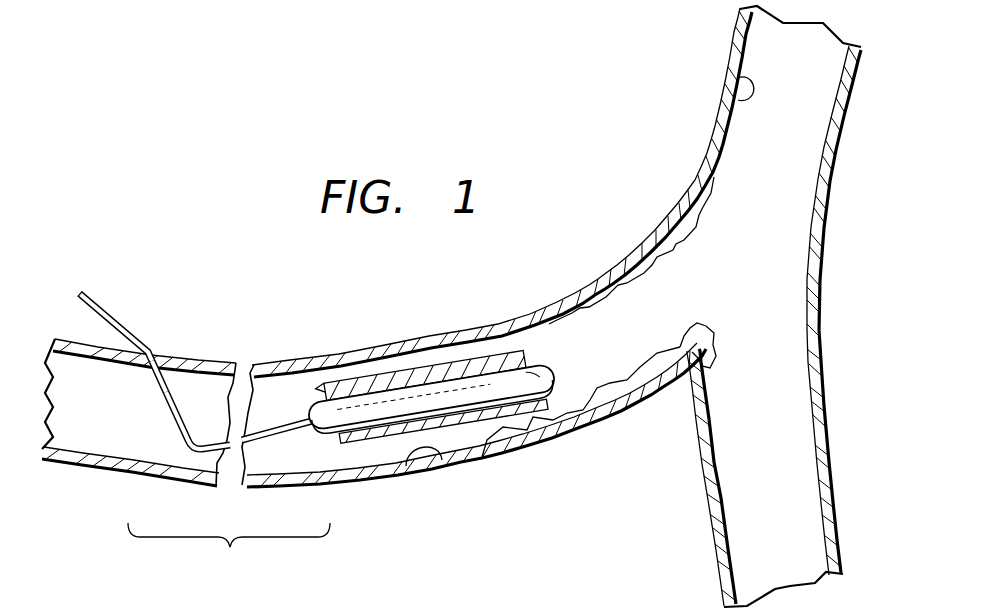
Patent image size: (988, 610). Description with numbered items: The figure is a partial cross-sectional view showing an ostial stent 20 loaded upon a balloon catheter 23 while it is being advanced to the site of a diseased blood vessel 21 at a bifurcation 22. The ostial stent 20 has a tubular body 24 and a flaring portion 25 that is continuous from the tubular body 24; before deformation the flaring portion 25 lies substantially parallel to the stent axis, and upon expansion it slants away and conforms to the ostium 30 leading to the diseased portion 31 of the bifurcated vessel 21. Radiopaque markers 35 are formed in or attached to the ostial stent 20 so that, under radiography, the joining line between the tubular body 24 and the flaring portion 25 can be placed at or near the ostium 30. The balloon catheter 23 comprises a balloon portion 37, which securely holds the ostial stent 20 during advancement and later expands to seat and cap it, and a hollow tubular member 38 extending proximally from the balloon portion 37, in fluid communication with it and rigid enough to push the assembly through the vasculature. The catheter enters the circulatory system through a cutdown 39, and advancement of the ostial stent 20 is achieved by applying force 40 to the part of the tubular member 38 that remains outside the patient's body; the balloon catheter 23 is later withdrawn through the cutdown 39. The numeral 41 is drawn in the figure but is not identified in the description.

The ostial stent 20 is at (461, 404).
The blood vessel 21 is at (733, 43).
The bifurcation 22 is at (692, 371).
The balloon catheter 23 is at (280, 426).
The tubular body 24 is at (434, 396).
The flaring portion 25 is at (459, 436).
The ostium 30 is at (451, 306).
The diseased portion 31 is at (630, 262).
The radiopaque markers 35 is at (431, 397).
The balloon portion 37 is at (572, 368).
The tubular member 38 is at (162, 394).
The cutdown 39 is at (160, 355).
The force 40 is at (143, 322).
The wall marker 41 is at (738, 100).